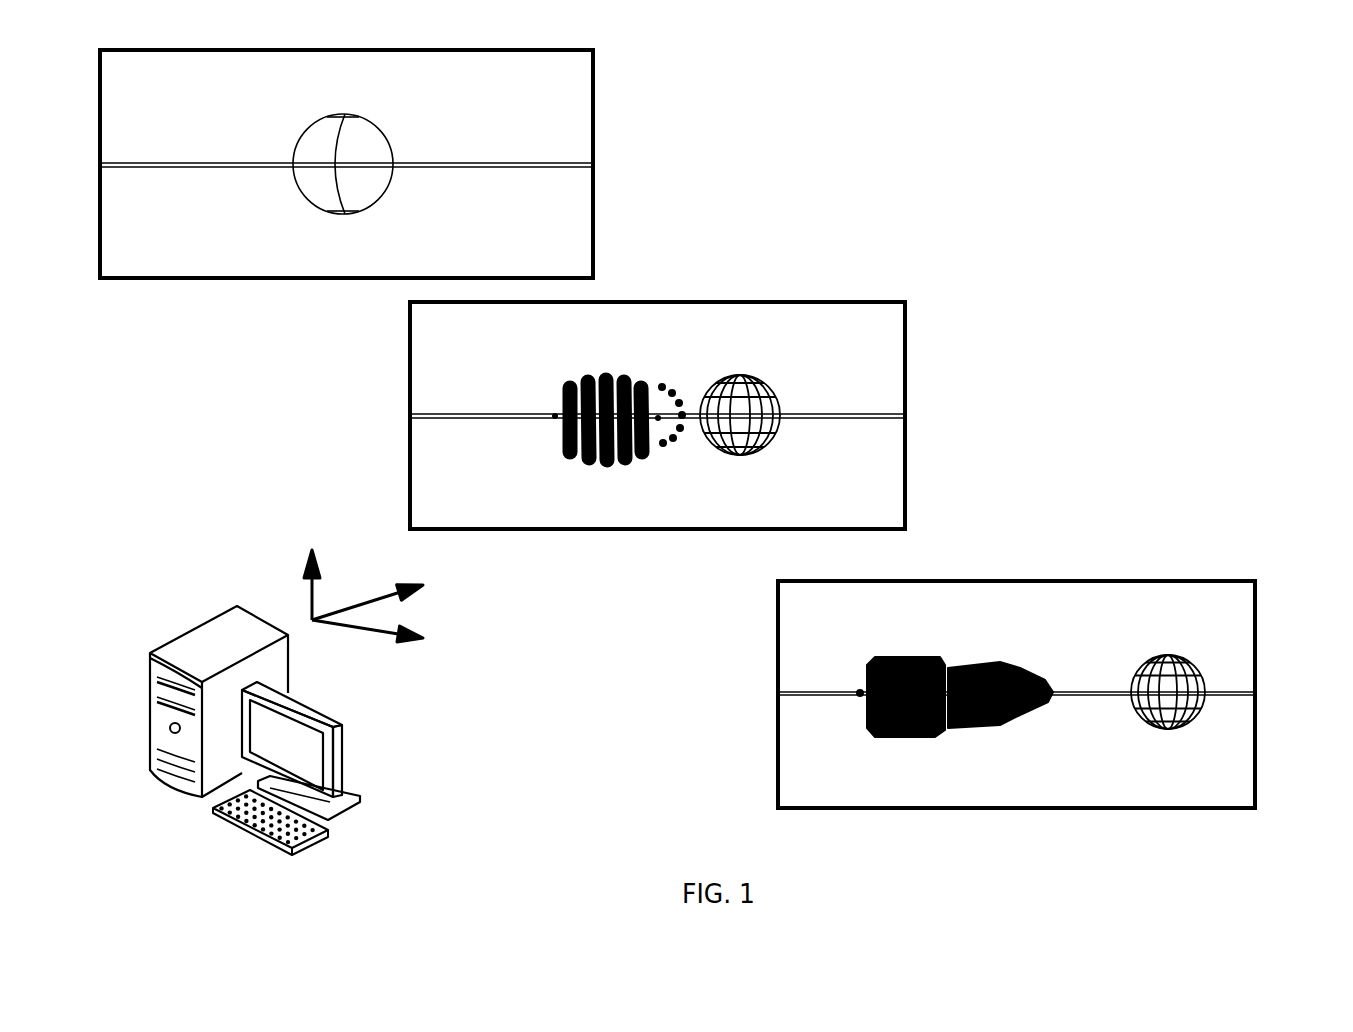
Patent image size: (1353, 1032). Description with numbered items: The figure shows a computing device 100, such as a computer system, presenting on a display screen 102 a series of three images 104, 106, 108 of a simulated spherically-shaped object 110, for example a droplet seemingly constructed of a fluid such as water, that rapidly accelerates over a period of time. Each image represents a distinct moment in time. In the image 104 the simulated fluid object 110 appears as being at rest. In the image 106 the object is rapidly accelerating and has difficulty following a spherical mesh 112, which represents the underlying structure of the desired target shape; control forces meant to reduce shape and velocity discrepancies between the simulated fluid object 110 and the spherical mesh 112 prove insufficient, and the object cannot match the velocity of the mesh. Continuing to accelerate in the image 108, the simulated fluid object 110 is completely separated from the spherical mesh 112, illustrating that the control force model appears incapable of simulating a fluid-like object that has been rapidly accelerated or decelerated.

The computing device 100 is at (190, 590).
The display screen 102 is at (343, 748).
The image 104 is at (596, 119).
The image 106 is at (907, 373).
The image 108 is at (1257, 634).
The simulated fluid object 110 is at (346, 128).
The spherical mesh 112 is at (757, 380).